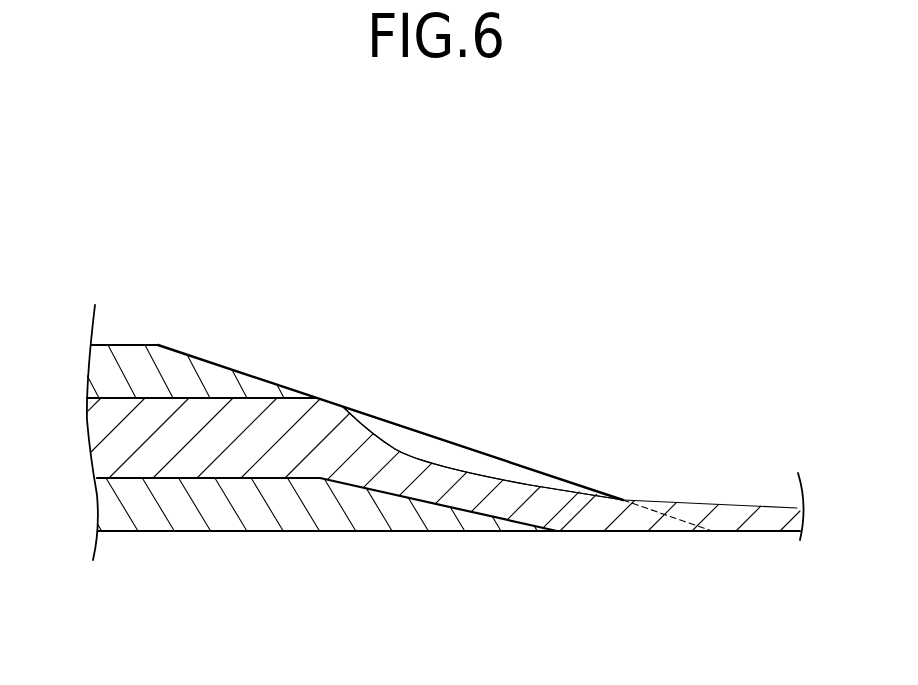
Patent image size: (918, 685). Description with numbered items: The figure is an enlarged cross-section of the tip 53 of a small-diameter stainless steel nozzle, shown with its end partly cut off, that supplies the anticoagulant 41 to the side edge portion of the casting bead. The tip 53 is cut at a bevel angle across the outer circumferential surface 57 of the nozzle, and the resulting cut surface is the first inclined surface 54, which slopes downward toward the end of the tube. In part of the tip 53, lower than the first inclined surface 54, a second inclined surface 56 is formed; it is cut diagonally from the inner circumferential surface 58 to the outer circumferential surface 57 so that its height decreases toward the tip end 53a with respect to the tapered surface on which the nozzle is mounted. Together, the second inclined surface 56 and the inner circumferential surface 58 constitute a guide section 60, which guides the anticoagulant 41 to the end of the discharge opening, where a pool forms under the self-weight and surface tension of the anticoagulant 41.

The tip 53 is at (443, 393).
The tip end 53a is at (613, 545).
The first inclined surface 54 is at (255, 373).
The second inclined surface 56 is at (438, 498).
The outer circumferential surface 57 is at (127, 345).
The inner circumferential surface 58 is at (478, 467).
The guide section 60 is at (483, 431).
The anticoagulant 41 is at (727, 510).